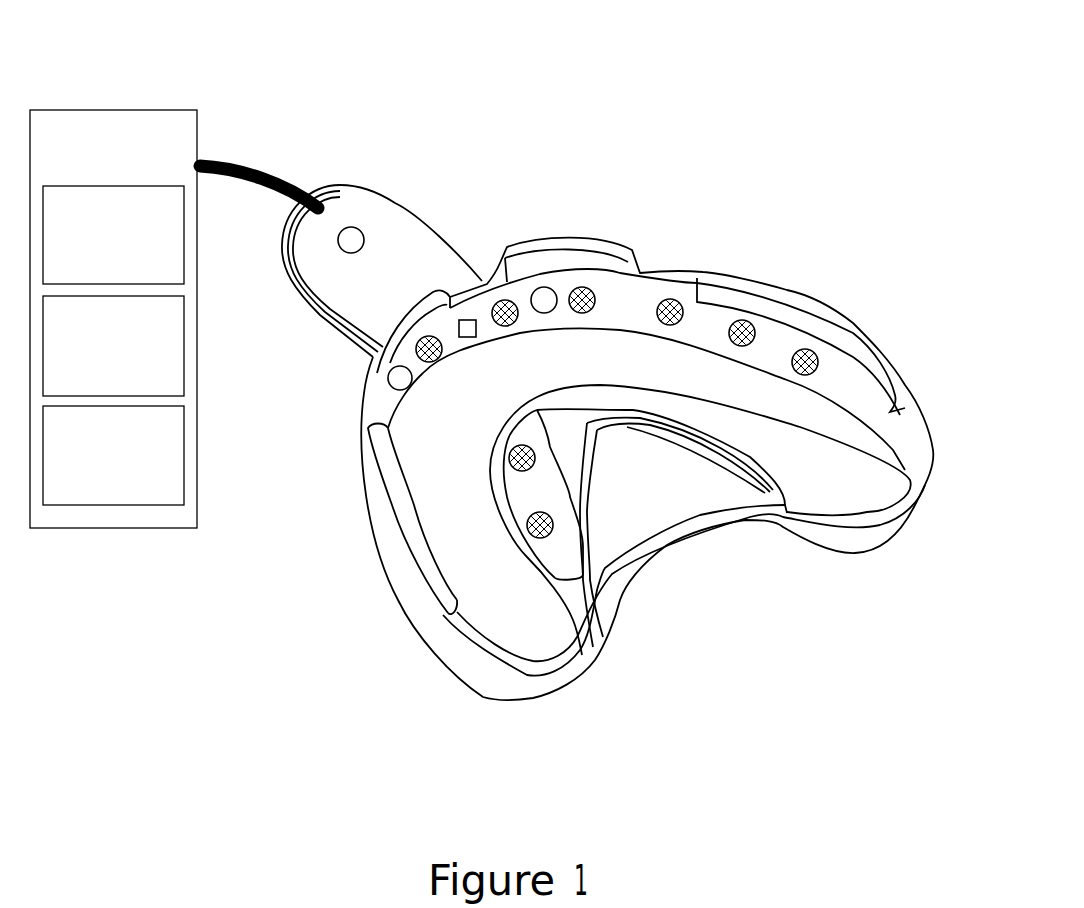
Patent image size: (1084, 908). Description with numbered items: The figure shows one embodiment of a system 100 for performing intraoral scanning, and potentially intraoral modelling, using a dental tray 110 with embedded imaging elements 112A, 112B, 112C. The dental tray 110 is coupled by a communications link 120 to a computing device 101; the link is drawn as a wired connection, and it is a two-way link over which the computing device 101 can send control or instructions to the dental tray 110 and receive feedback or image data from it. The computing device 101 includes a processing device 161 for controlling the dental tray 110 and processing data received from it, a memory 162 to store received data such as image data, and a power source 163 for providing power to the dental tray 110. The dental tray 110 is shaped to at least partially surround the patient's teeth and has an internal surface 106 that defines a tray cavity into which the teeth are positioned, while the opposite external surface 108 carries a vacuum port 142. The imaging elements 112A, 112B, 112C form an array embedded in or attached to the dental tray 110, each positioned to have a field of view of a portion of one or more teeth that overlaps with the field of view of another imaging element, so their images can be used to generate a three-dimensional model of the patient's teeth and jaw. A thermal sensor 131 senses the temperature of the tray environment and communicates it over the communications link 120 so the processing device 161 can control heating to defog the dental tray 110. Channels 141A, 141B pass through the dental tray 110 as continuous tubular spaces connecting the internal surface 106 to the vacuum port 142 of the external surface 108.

The system 100 is at (716, 56).
The computing device 101 is at (113, 319).
The processing device 161 is at (113, 235).
The memory 162 is at (113, 346).
The power source 163 is at (113, 455).
The communications link 120 is at (253, 167).
The vacuum port 142 is at (347, 228).
The thermal sensor 131 is at (465, 320).
The channel 141A is at (536, 289).
The channel 141B is at (388, 380).
The imaging element 112A is at (583, 287).
The imaging element 112B is at (673, 299).
The imaging element 112C is at (745, 320).
The internal surface 106 is at (381, 407).
The external surface 108 is at (383, 531).
The dental tray 110 is at (569, 463).